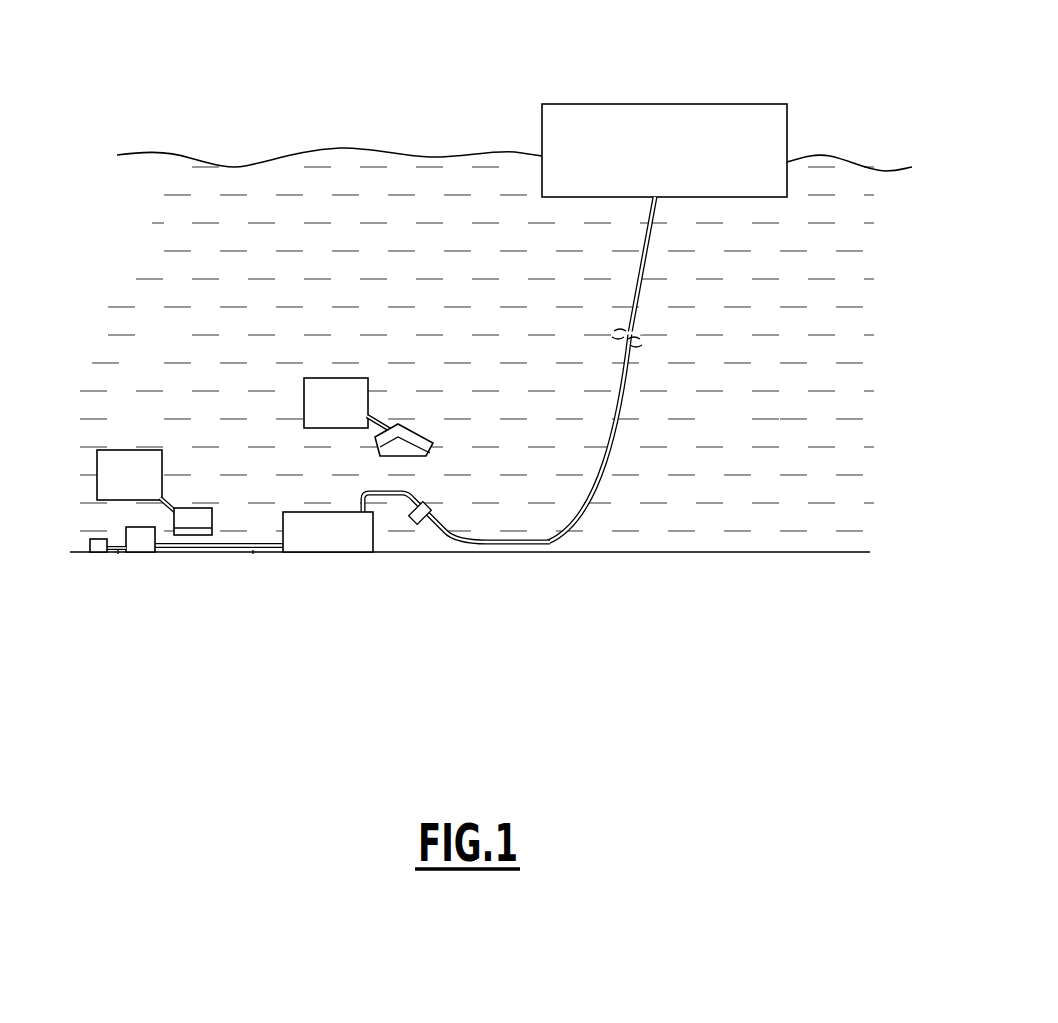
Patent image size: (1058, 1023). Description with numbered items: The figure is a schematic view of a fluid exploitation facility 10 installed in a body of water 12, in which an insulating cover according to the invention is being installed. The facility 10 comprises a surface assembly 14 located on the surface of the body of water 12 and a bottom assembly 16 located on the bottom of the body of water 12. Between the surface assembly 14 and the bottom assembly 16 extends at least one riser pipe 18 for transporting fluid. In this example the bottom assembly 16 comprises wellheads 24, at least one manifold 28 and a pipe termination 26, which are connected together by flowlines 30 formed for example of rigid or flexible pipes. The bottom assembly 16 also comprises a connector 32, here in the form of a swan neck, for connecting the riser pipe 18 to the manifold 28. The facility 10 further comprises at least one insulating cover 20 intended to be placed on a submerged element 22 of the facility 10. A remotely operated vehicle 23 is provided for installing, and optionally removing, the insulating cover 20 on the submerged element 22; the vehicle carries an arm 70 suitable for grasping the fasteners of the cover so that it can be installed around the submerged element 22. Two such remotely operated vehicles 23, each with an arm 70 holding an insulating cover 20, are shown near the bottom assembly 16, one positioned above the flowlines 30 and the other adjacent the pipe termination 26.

The fluid exploitation facility 10 is at (770, 50).
The body of water 12 is at (477, 349).
The surface assembly 14 is at (520, 112).
The bottom assembly 16 is at (244, 368).
The riser pipe 18 is at (708, 275).
The insulating cover 20 is at (196, 508).
The submerged element 22 is at (452, 482).
The remotely operated vehicle 23 is at (120, 450).
The wellheads 24 is at (98, 540).
The pipe termination 26 is at (142, 553).
The manifold 28 is at (322, 553).
The flowlines 30 is at (118, 553).
The connector 32 is at (418, 540).
The arm 70 is at (167, 502).